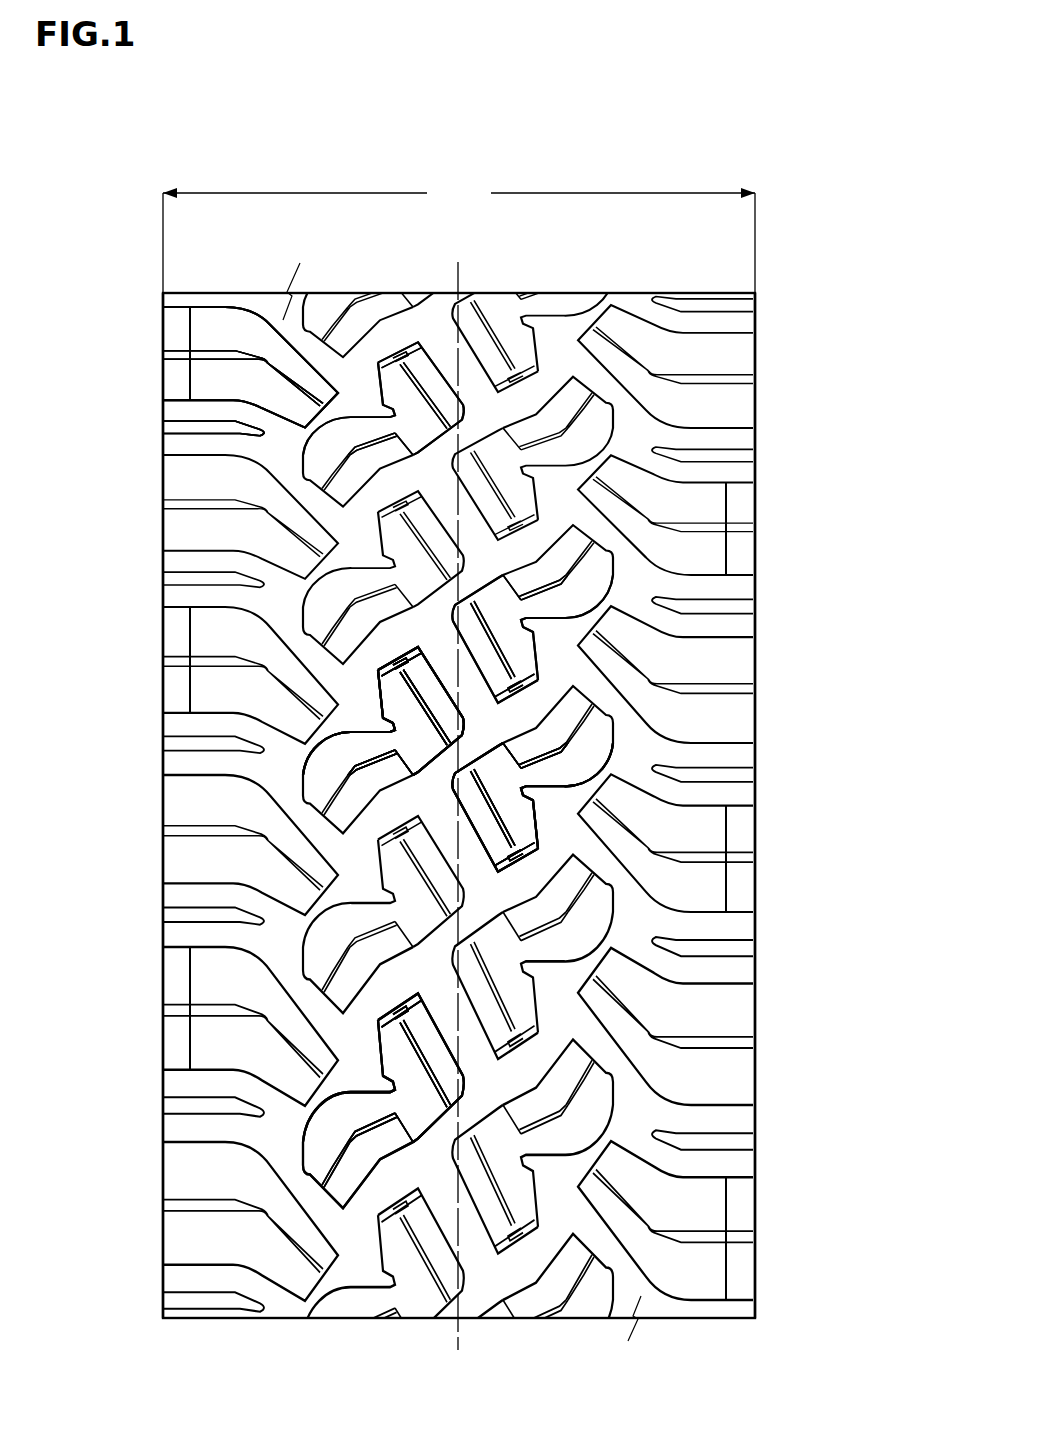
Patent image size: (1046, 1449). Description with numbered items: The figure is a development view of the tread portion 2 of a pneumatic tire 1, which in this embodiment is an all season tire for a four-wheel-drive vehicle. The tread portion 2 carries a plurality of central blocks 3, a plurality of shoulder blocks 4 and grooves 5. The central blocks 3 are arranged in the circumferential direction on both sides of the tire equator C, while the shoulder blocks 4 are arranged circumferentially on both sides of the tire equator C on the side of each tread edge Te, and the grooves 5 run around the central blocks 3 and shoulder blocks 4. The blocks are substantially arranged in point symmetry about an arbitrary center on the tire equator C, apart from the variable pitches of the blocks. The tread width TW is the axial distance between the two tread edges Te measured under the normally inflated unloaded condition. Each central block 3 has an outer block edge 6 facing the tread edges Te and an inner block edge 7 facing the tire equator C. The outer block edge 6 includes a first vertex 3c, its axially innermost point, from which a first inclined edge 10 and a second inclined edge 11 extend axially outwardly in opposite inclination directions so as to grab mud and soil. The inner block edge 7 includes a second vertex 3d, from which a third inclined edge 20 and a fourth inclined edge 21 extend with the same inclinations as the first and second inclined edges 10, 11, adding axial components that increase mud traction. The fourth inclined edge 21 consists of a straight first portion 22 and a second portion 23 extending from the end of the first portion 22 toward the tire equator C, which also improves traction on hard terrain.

The pneumatic tire 1 is at (813, 144).
The tread portion 2 is at (753, 172).
The central block 3 is at (404, 392).
The first vertex 3c is at (480, 727).
The second vertex 3d is at (455, 745).
The shoulder block 4 is at (215, 386).
The groove 5 is at (362, 368).
The outer block edge 6 is at (76, 632).
The inner block edge 7 is at (857, 915).
The first inclined edge 10 is at (385, 717).
The second inclined edge 11 is at (415, 777).
The third inclined edge 20 is at (470, 868).
The fourth inclined edge 21 is at (465, 912).
The first portion 22 is at (362, 1178).
The second portion 23 is at (378, 1157).
The tread width TW is at (459, 236).
The tread edge Te is at (164, 328).
The tire equator C is at (457, 792).